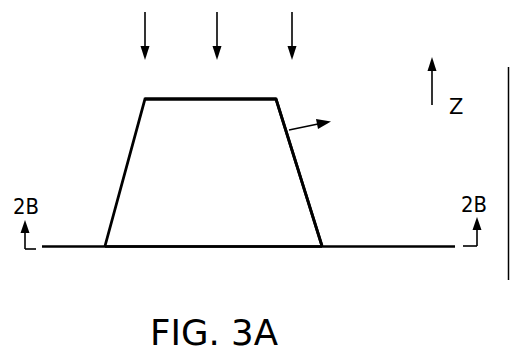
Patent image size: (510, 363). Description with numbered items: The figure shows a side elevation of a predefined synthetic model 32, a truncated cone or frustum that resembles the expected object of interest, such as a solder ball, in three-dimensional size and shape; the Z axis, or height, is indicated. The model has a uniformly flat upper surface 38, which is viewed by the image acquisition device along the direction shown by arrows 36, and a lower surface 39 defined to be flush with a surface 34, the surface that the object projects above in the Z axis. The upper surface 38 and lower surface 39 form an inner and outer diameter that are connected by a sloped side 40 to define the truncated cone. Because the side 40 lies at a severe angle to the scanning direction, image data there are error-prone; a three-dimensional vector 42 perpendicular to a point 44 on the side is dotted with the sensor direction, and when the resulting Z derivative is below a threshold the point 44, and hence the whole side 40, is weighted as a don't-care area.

The predefined synthetic model 32 is at (107, 162).
The surface 34 is at (375, 245).
The arrows 36 is at (292, 30).
The upper surface 38 is at (276, 99).
The lower surface 39 is at (195, 247).
The side 40 is at (310, 200).
The 3D vector 42 is at (302, 133).
The point 44 is at (290, 127).